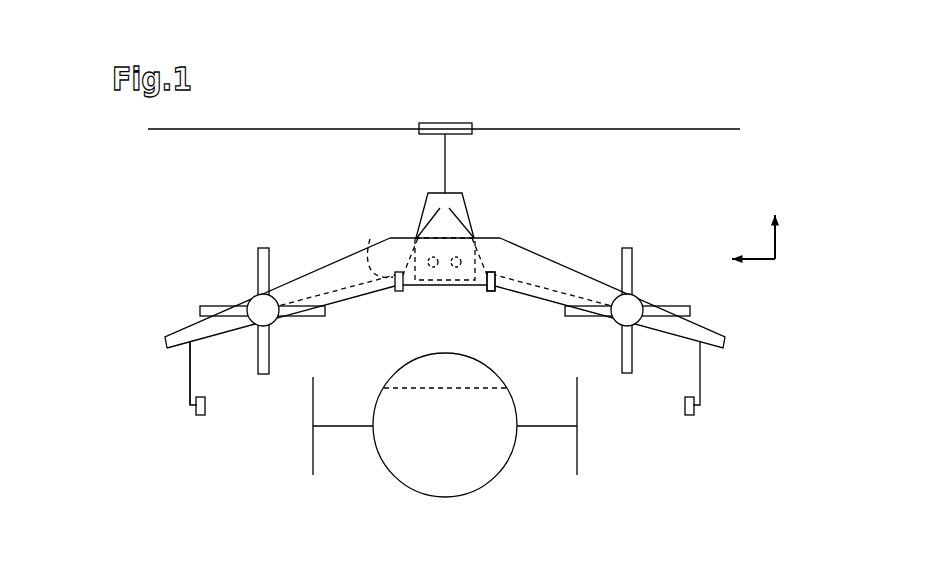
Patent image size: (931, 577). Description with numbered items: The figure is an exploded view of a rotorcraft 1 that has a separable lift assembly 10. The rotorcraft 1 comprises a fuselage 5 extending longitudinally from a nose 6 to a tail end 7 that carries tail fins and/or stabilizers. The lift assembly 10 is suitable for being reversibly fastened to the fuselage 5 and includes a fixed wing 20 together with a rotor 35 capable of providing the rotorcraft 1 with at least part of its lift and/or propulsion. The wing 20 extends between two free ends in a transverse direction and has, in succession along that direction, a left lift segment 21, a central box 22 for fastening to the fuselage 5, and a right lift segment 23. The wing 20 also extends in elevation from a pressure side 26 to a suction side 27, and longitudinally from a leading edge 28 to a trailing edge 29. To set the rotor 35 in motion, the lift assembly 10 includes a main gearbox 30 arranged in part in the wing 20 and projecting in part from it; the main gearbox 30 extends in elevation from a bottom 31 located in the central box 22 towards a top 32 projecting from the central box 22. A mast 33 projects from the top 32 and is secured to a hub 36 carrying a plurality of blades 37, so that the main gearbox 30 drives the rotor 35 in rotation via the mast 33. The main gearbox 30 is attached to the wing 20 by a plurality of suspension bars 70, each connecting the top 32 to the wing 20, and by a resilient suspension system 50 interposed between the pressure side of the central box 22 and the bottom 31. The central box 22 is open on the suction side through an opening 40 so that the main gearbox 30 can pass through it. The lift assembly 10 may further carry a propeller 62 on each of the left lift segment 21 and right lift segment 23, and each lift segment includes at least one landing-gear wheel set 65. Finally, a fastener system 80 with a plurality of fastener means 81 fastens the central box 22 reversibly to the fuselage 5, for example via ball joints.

The rotorcraft 1 is at (258, 463).
The fuselage 5 is at (506, 462).
The nose 6 is at (452, 435).
The tail end 7 is at (590, 449).
The lift assembly 10 is at (700, 95).
The wing 20 is at (178, 376).
The left lift segment 21 is at (283, 278).
The central box 22 is at (497, 238).
The right lift segment 23 is at (563, 264).
The pressure side 26 is at (357, 306).
The suction side 27 is at (320, 262).
The leading edge 28 is at (206, 330).
The trailing edge 29 is at (213, 299).
The main gearbox 30 is at (468, 208).
The bottom 31 is at (462, 287).
The top 32 is at (410, 214).
The mast 33 is at (447, 168).
The rotor 35 is at (456, 115).
The hub 36 is at (433, 123).
The blades 37 is at (585, 128).
The opening 40 is at (395, 231).
The resilient suspension system 50 is at (429, 297).
The propeller 62 is at (292, 332).
The landing-gear wheel set 65 is at (190, 358).
The suspension bars 70 is at (416, 237).
The fastener system 80 is at (497, 300).
The fastener means 81 is at (393, 273).